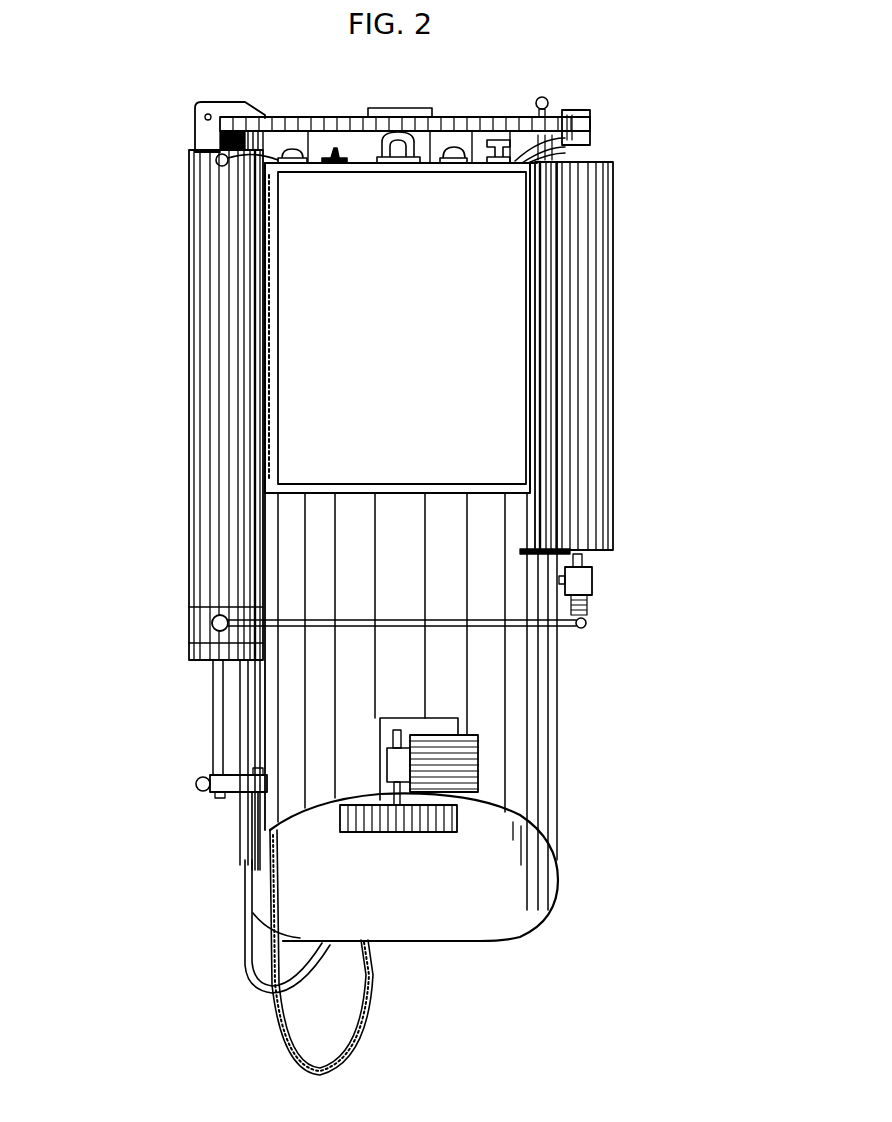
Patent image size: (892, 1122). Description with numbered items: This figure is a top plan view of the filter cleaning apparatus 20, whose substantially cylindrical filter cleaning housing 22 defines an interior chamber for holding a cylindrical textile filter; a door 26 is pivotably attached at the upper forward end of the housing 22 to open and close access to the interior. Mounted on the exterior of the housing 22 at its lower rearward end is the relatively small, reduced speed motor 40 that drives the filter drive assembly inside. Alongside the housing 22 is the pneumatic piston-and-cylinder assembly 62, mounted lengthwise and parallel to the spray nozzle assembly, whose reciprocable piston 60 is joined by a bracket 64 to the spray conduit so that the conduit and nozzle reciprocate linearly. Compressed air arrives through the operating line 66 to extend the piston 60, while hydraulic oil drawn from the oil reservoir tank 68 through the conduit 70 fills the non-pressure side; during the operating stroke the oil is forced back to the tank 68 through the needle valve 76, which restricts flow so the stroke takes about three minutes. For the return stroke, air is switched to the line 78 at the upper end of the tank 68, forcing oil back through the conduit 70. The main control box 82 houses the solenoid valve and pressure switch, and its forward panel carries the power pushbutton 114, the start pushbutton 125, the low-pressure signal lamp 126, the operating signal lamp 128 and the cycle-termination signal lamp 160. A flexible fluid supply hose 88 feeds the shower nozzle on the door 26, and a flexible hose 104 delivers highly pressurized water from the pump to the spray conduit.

The filter cleaning apparatus 20 is at (182, 557).
The filter cleaning housing 22 is at (556, 770).
The door 26 is at (323, 122).
The motor 40 is at (478, 762).
The piston 60 is at (215, 722).
The piston-and-cylinder assembly 62 is at (190, 418).
The bracket 64 is at (230, 797).
The operating line 66 is at (222, 148).
The oil reservoir tank 68 is at (613, 380).
The conduit 70 is at (586, 628).
The needle valve 76 is at (585, 585).
The line 78 is at (576, 112).
The main control box 82 is at (372, 357).
The flexible fluid supply hose 88 is at (245, 962).
The flexible hose 104 is at (371, 985).
The operating pushbutton 114 is at (501, 145).
The operating pushbutton 125 is at (285, 157).
The low-pressure signal lamp 126 is at (456, 152).
The signal lamp 128 is at (338, 157).
The cycle-termination signal lamp 160 is at (399, 140).